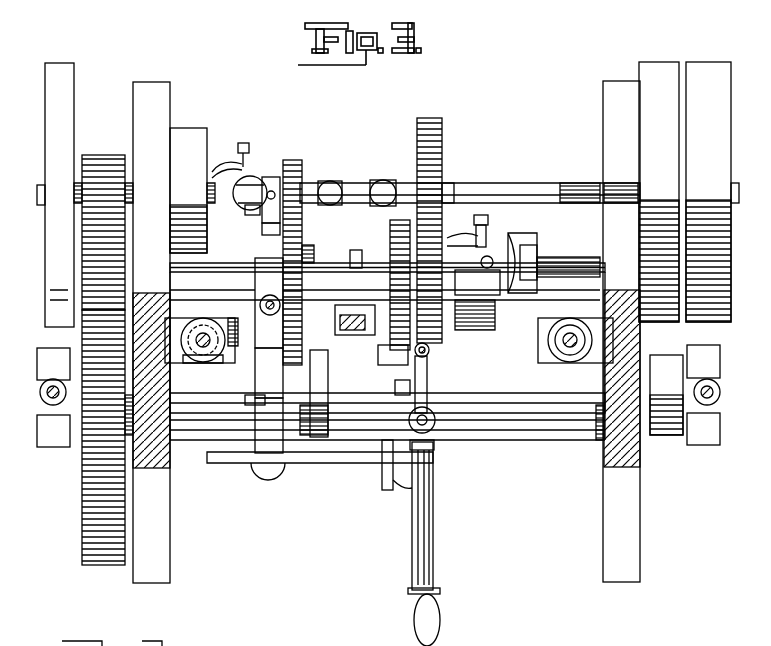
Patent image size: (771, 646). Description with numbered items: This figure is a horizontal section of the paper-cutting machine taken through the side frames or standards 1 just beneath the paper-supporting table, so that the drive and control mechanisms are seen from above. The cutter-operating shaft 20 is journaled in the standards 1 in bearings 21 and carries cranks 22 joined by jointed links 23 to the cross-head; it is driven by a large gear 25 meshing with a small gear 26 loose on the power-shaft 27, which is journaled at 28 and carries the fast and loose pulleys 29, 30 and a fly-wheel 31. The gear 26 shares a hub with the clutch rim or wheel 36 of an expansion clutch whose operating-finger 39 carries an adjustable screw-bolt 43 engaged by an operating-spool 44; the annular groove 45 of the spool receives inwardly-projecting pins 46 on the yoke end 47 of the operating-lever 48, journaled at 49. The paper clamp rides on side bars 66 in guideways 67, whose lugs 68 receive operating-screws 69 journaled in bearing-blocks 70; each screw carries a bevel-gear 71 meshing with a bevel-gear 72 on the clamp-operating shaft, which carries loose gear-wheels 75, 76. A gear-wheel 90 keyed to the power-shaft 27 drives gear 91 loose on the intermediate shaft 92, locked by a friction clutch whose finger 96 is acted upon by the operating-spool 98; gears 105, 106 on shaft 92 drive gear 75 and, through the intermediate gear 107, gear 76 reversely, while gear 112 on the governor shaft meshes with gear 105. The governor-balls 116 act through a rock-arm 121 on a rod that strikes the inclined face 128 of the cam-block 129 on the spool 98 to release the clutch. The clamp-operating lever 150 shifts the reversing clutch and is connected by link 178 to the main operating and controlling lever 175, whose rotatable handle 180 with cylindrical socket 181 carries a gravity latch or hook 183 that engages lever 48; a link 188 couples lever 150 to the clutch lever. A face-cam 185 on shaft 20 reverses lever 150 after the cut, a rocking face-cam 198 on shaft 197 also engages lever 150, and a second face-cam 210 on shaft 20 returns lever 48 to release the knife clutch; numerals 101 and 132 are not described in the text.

The side frames or standards 1 is at (165, 525).
The cutter-operating shaft 20 is at (387, 416).
The bearings 21 is at (598, 428).
The cranks 22 is at (672, 436).
The jointed links 23 is at (42, 415).
The large gear 25 is at (95, 500).
The small gear 26 is at (93, 163).
The power-shaft 27 is at (560, 190).
The bearings 28 is at (612, 190).
The fast pulley 29 is at (658, 78).
The loose pulley 30 is at (704, 72).
The fly-wheel 31 is at (48, 124).
The clutch rim or wheel 36 is at (183, 138).
The operating-finger 39 is at (222, 164).
The adjustable screw-bolt 43 is at (248, 152).
The operating-spool 44 is at (254, 186).
The annular groove 45 is at (278, 178).
The inwardly-projecting pins 46 is at (248, 212).
The yoke end 47 is at (268, 224).
The operating-lever 48 is at (269, 425).
The journal 49 is at (270, 300).
The side bars 66 is at (195, 326).
The guideways 67 is at (160, 310).
The blocks or lugs 68 is at (214, 328).
The operating-screws 69 is at (212, 350).
The bearing-blocks 70 is at (200, 355).
The bevel-gear 71 is at (269, 303).
The bevel-gear 72 is at (234, 322).
The gear-wheel 75 is at (276, 352).
The gear-wheel 76 is at (348, 362).
The gear-wheel 90 is at (430, 119).
The gear 91 is at (428, 350).
The intermediate shaft 92 is at (552, 262).
The finger 96 is at (456, 238).
The operating-spool 98 is at (482, 248).
The collar 101 is at (534, 265).
The gear-wheel 105 is at (305, 256).
The gear-wheel 106 is at (394, 262).
The intermediate gear 107 is at (426, 384).
The gear-wheel 112 is at (300, 178).
The governor-balls 116 is at (334, 183).
The rock-arm 121 is at (384, 183).
The inclined face 128 is at (506, 260).
The cam-block 129 is at (492, 288).
The link 132 is at (388, 478).
The clamp-operating lever 150 is at (352, 310).
The main operating and controlling lever 175 is at (402, 358).
The link 178 is at (400, 386).
The rotatable handle 180 is at (432, 600).
The cylindrical socket 181 is at (415, 510).
The gravity latch or hook 183 is at (316, 456).
The face-cam 185 is at (302, 425).
The link 188 is at (470, 332).
The shaft 197 is at (356, 262).
The rocking face-cam 198 is at (440, 205).
The second face-cam 210 is at (262, 402).